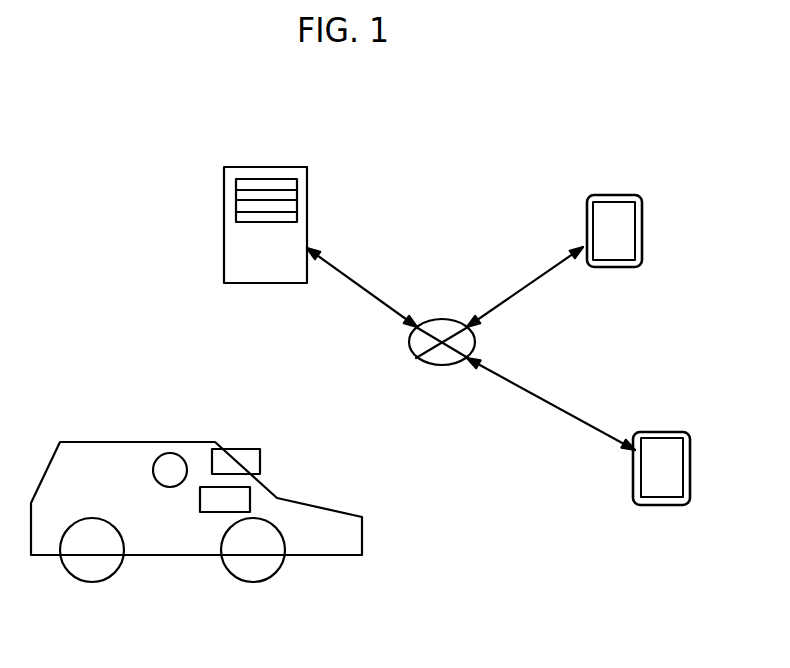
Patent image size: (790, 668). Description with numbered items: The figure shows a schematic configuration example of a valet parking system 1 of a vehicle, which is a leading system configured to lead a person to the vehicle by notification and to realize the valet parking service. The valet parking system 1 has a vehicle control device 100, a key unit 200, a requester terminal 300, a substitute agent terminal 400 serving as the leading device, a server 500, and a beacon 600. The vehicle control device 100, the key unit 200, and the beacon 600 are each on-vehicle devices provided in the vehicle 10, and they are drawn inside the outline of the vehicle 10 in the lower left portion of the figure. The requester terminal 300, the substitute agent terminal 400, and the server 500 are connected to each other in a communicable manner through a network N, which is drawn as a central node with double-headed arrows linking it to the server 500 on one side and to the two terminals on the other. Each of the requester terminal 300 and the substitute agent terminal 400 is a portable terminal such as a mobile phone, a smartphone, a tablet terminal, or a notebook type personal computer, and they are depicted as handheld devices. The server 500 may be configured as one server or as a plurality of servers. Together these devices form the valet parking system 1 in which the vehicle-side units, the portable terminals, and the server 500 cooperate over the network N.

The valet parking system 1 is at (75, 168).
The vehicle 10 is at (98, 442).
The vehicle control device 100 is at (250, 497).
The key unit 200 is at (240, 449).
The requester terminal 300 is at (660, 432).
The substitute agent terminal 400 is at (613, 195).
The server 500 is at (278, 167).
The beacon 600 is at (170, 453).
The network N is at (441, 320).